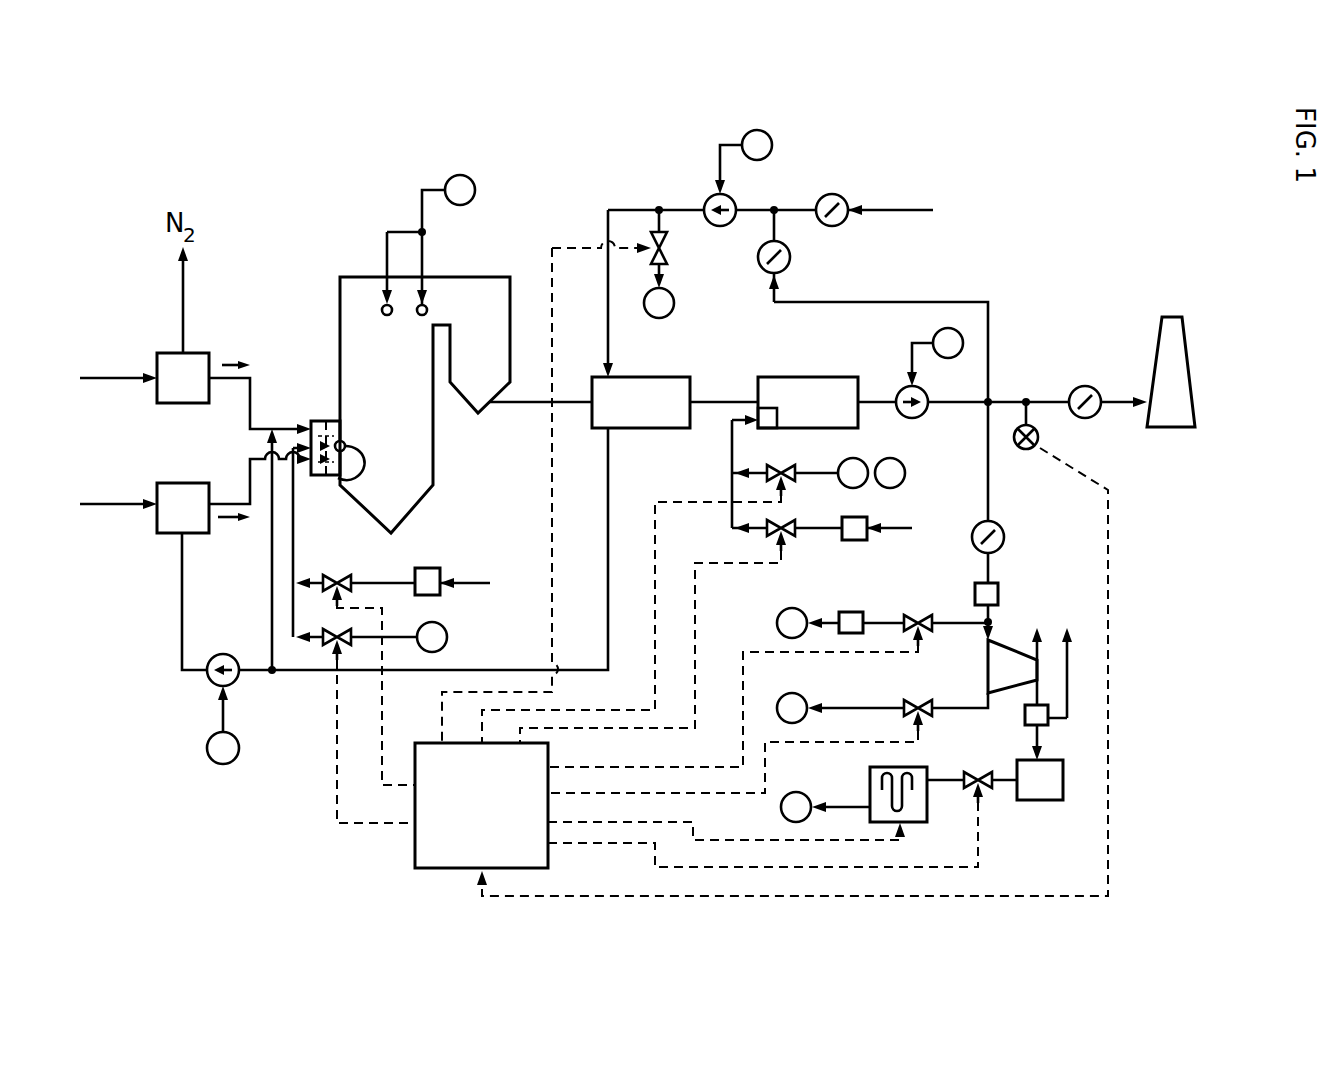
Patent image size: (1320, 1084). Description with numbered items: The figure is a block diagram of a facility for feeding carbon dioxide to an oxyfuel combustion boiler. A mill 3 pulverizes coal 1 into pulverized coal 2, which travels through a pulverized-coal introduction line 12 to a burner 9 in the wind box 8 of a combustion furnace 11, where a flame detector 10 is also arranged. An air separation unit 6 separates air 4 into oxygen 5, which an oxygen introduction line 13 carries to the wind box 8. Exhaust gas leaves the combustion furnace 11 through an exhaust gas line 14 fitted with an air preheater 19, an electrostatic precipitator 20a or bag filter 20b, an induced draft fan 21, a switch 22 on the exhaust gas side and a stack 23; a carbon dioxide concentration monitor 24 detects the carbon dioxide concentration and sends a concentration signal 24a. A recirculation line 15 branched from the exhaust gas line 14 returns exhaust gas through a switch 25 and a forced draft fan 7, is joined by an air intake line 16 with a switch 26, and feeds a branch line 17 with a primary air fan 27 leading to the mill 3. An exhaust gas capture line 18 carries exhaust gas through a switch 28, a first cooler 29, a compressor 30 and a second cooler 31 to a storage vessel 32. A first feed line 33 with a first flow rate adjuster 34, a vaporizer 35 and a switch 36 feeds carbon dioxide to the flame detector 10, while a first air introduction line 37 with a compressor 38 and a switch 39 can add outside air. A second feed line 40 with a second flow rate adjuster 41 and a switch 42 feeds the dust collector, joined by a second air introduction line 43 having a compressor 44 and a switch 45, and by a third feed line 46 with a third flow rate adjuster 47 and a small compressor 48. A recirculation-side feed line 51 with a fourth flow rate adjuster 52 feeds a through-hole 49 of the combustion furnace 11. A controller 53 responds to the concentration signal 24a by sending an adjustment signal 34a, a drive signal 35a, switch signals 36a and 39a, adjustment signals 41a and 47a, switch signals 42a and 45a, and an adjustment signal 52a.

The coal 1 is at (95, 505).
The pulverized coal 2 is at (232, 522).
The mill 3 is at (157, 533).
The air 4 is at (103, 372).
The oxygen 5 is at (228, 362).
The air separation unit 6 is at (157, 400).
The forced draft fan 7 is at (705, 200).
The wind box 8 is at (332, 418).
The burner 9 is at (310, 422).
The flame detector 10 is at (345, 478).
The combustion furnace 11 is at (402, 400).
The pulverized-coal introduction line 12 is at (250, 468).
The oxygen introduction line 13 is at (290, 424).
The exhaust gas line 14 is at (510, 407).
The recirculation line 15 is at (912, 300).
The air intake line 16 is at (803, 208).
The branch line 17 is at (182, 647).
The exhaust gas capture line 18 is at (985, 462).
The air preheater 19 is at (665, 377).
The electrostatic precipitator 20a is at (760, 377).
The bag filter 20b is at (767, 418).
The induced draft fan 21 is at (928, 396).
The switch on the exhaust gas side 22 is at (1082, 386).
The stack 23 is at (1193, 365).
The carbon dioxide concentration monitor 24 is at (1040, 438).
The concentration signal 24a is at (1110, 580).
The switch on the recirculation side 25 is at (790, 262).
The switch on the air intake side 26 is at (835, 194).
The primary air fan 27 is at (208, 690).
The switch on the capture side 28 is at (1000, 522).
The first cooler 29 is at (1000, 590).
The compressor 30 is at (1005, 665).
The second cooler 31 is at (1025, 720).
The storage vessel 32 is at (1040, 800).
The first feed line 33 is at (415, 635).
The first flow rate adjuster 34 is at (965, 775).
The adjustment signal 34a is at (652, 858).
The vaporizer 35 is at (930, 815).
The drive signal 35a is at (838, 843).
The switch on the carbon dioxide gas side 36 is at (336, 632).
The switch signal 36a is at (336, 830).
The first air introduction line 37 is at (370, 583).
The compressor 38 is at (436, 568).
The switch on the air side 39 is at (337, 572).
The switch signal 39a is at (383, 765).
The second feed line 40 is at (828, 472).
The second flow rate adjuster 41 is at (905, 702).
The adjustment signal 41a is at (705, 793).
The switch on the dust collector side 42 is at (772, 468).
The switch signal 42a is at (570, 708).
The second air introduction line 43 is at (822, 528).
The compressor 44 is at (848, 540).
The switch on the air side 45 is at (768, 533).
The switch signal 45a is at (672, 735).
The third feed line 46 is at (955, 620).
The third flow rate adjuster 47 is at (908, 605).
The adjustment signal 47a is at (585, 765).
The small compressor 48 is at (855, 610).
The through-hole 49 is at (385, 305).
The recirculation-side feed line 51 is at (223, 713).
The fourth flow rate adjuster 52 is at (670, 250).
The adjustment signal 52a is at (552, 500).
The controller 53 is at (500, 814).